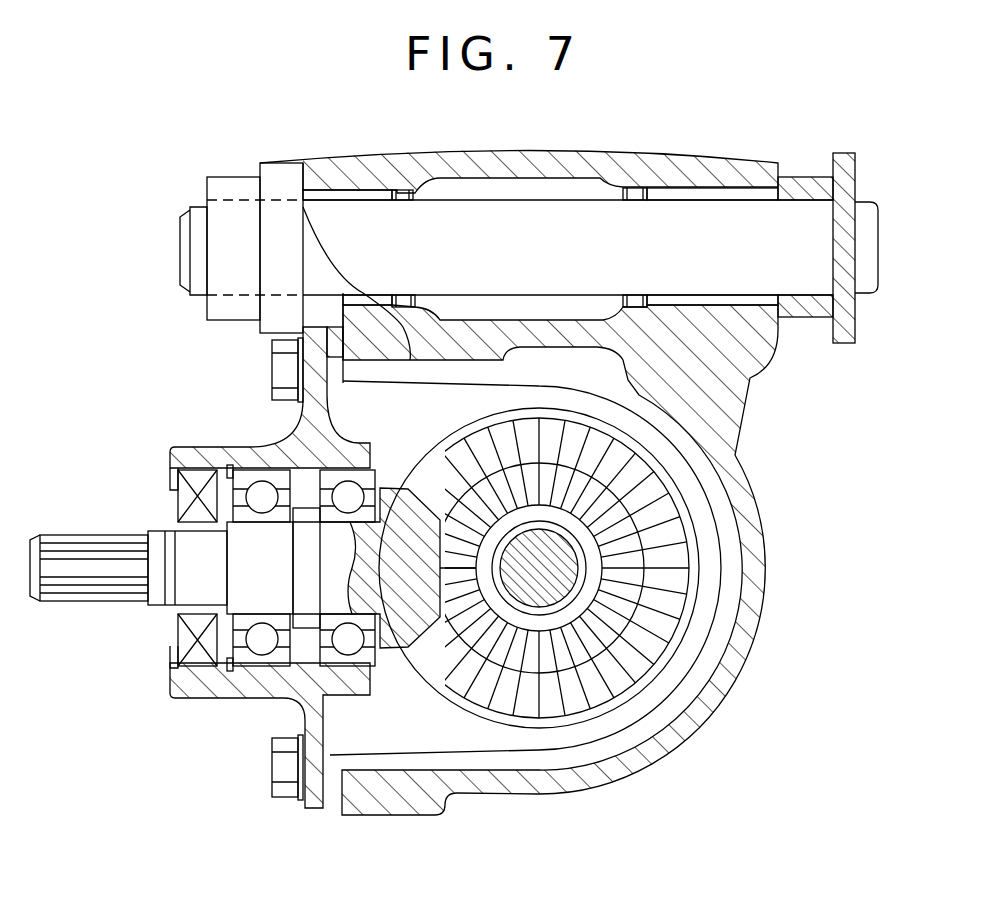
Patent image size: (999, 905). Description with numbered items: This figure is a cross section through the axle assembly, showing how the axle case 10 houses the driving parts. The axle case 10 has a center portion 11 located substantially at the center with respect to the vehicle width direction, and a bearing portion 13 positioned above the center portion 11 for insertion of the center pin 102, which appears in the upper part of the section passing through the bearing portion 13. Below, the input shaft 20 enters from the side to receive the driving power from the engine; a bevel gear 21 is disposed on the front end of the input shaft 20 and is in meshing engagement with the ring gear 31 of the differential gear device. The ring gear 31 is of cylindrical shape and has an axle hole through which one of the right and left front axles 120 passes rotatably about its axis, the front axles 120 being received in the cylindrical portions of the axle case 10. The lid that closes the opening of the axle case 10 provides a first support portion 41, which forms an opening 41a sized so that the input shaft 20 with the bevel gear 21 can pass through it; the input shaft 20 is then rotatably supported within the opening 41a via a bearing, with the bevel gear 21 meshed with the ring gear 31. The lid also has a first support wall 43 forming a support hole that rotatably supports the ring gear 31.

The axle case 10 is at (804, 407).
The center portion 11 is at (748, 560).
The bearing portion 13 is at (708, 173).
The input shaft 20 is at (95, 568).
The bevel gear 21 is at (410, 628).
The ring gear 31 is at (640, 667).
The first support portion 41 is at (262, 692).
The opening 41a is at (228, 645).
The first support wall 43 is at (587, 732).
The center pin 102 is at (817, 248).
The front axles 120 is at (540, 580).